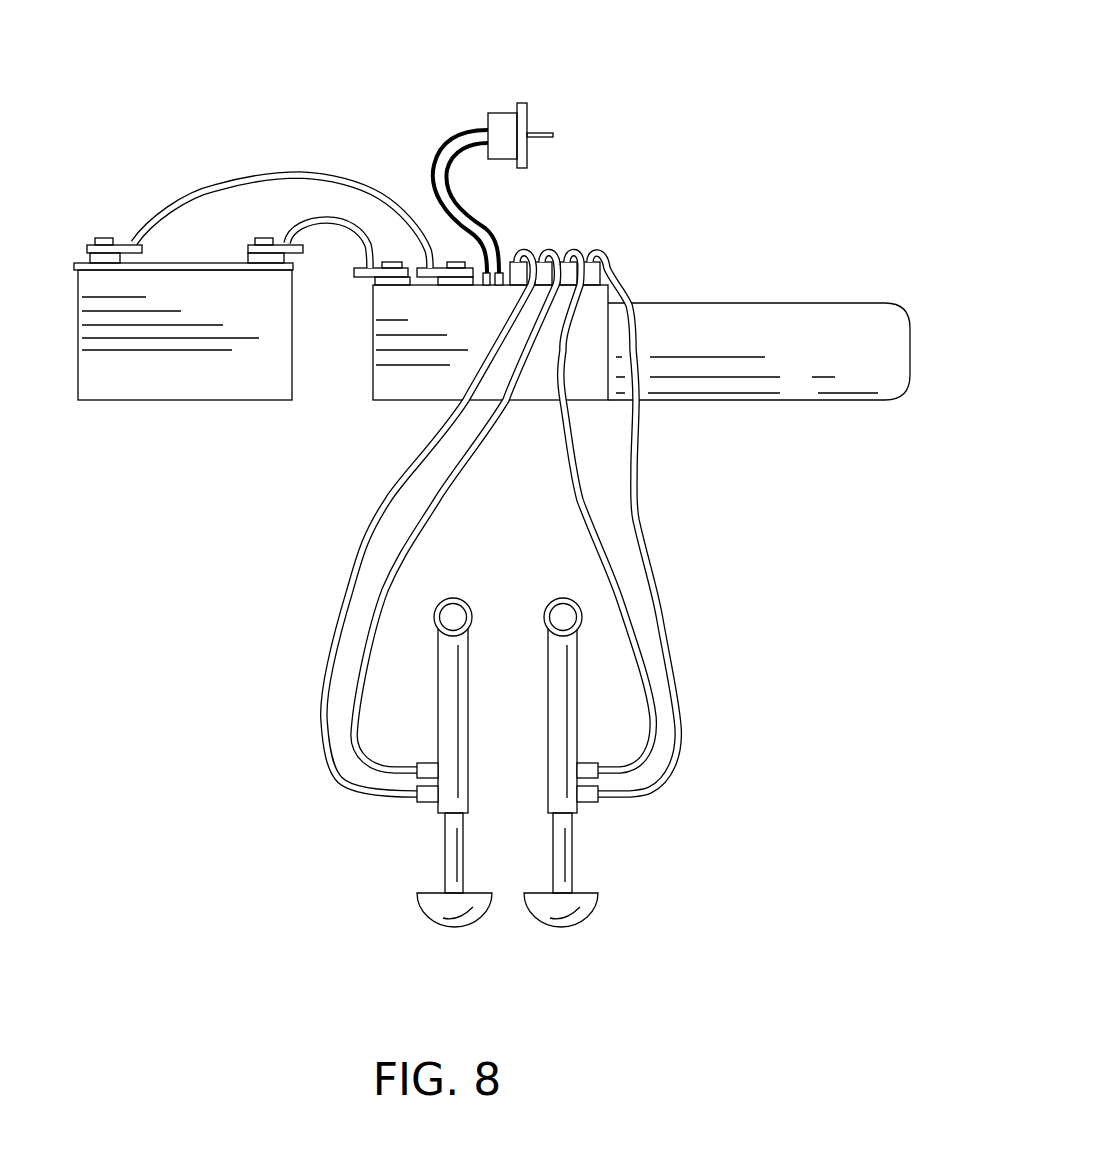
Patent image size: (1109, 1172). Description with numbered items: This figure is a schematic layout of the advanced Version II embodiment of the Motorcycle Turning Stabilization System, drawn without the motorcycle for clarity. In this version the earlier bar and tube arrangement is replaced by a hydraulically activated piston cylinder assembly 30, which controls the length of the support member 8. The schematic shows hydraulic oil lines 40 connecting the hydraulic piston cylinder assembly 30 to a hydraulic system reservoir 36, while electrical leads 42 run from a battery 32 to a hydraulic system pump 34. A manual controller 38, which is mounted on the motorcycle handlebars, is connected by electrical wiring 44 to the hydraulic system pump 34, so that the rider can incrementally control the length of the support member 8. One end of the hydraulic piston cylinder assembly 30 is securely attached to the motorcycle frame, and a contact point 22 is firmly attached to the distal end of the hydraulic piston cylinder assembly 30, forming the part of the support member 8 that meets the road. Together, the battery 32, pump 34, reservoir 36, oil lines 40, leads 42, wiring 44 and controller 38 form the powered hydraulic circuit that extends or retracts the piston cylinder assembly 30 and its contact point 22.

The support member 8 is at (495, 795).
The contact point 22 is at (558, 932).
The hydraulic piston cylinder assembly 30 is at (548, 720).
The battery 32 is at (190, 378).
The hydraulic system pump 34 is at (408, 388).
The hydraulic system reservoir 36 is at (795, 383).
The manual controller 38 is at (503, 121).
The hydraulic oil lines 40 is at (575, 480).
The electrical leads 42 is at (329, 217).
The electrical wiring 44 is at (436, 180).